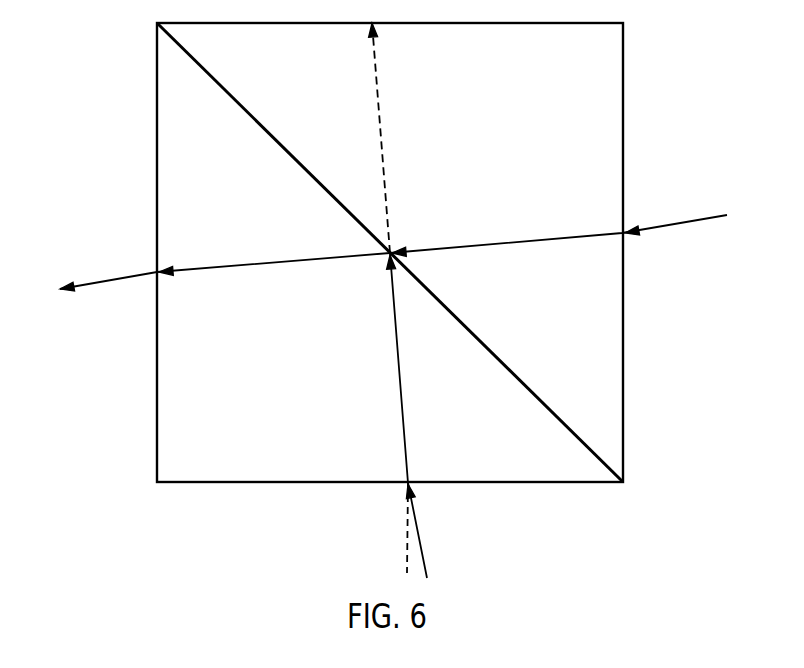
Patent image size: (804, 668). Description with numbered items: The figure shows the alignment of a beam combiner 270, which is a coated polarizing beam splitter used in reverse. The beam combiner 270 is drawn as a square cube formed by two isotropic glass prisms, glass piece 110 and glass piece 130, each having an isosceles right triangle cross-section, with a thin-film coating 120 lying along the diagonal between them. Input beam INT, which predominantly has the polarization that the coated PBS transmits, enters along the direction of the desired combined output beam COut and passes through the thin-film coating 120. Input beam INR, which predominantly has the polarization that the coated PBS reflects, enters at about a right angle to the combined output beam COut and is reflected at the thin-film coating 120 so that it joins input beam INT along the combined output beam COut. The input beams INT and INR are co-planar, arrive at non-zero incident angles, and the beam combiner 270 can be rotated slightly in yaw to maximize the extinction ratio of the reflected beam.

The beam combiner 270 is at (623, 60).
The isotropic glass piece 110 is at (562, 94).
The thin-film coating 120 is at (253, 113).
The isotropic glass piece 130 is at (251, 437).
The input beam INT is at (678, 225).
The input beam INR is at (416, 525).
The combined output beam COut is at (113, 278).